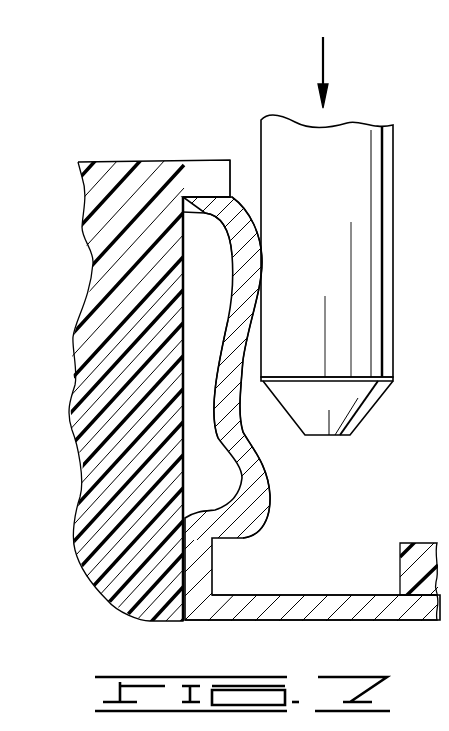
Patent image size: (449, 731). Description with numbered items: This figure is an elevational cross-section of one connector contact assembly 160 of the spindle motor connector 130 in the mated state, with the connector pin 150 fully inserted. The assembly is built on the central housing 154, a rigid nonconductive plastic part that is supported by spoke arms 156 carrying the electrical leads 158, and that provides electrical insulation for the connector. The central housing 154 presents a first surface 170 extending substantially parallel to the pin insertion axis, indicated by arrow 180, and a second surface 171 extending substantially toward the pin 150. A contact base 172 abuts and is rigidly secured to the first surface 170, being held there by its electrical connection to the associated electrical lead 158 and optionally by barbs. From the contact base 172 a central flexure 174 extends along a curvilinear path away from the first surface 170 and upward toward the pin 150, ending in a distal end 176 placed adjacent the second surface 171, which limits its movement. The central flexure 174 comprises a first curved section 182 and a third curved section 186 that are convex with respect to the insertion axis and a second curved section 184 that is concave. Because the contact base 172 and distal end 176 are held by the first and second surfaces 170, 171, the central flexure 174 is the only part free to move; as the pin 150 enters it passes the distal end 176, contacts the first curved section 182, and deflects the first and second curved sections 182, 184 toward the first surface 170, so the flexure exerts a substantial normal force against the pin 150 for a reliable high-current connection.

The spindle motor connector 130 is at (228, 367).
The connector pin 150 is at (337, 292).
The central housing 154 is at (79, 552).
The spoke arms 156 is at (400, 548).
The electrical leads 158 is at (355, 607).
The connector contact assembly 160 is at (371, 441).
The first surface 170 is at (176, 288).
The second surface 171 is at (239, 197).
The contact base 172 is at (200, 578).
The central flexure 174 is at (235, 425).
The distal end 176 is at (218, 225).
The arrow 180 is at (320, 64).
The first curved section 182 is at (243, 236).
The second curved section 184 is at (235, 358).
The third curved section 186 is at (258, 497).